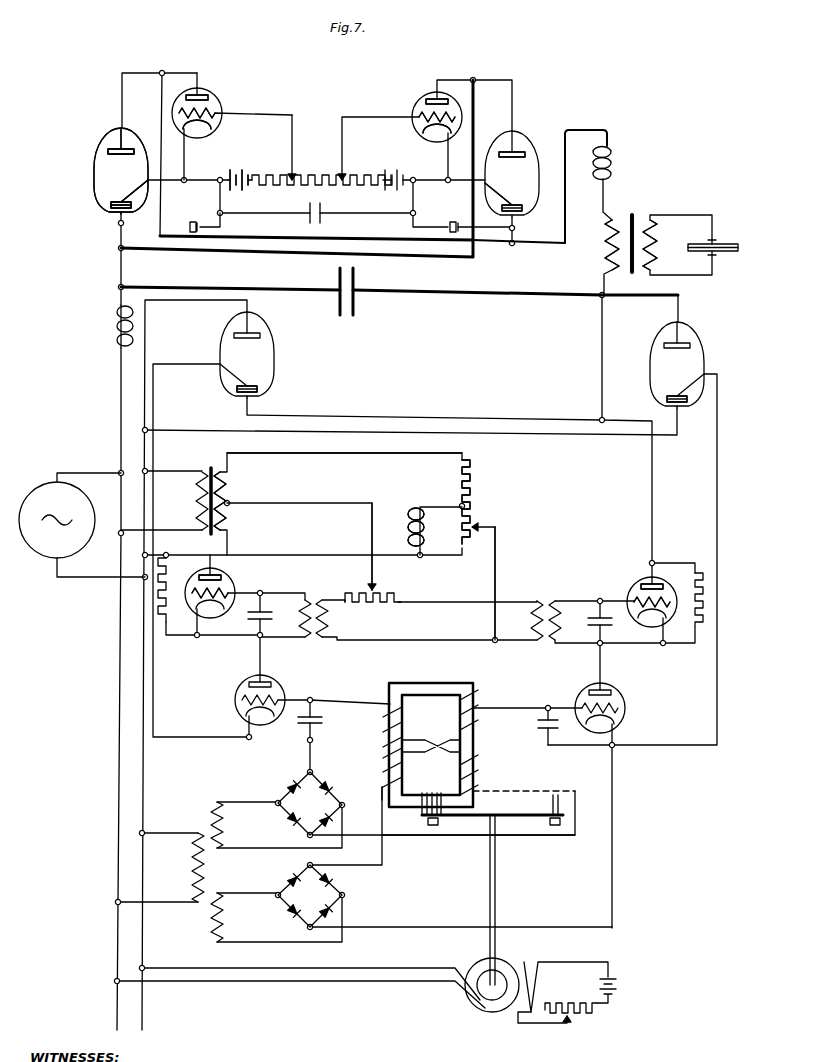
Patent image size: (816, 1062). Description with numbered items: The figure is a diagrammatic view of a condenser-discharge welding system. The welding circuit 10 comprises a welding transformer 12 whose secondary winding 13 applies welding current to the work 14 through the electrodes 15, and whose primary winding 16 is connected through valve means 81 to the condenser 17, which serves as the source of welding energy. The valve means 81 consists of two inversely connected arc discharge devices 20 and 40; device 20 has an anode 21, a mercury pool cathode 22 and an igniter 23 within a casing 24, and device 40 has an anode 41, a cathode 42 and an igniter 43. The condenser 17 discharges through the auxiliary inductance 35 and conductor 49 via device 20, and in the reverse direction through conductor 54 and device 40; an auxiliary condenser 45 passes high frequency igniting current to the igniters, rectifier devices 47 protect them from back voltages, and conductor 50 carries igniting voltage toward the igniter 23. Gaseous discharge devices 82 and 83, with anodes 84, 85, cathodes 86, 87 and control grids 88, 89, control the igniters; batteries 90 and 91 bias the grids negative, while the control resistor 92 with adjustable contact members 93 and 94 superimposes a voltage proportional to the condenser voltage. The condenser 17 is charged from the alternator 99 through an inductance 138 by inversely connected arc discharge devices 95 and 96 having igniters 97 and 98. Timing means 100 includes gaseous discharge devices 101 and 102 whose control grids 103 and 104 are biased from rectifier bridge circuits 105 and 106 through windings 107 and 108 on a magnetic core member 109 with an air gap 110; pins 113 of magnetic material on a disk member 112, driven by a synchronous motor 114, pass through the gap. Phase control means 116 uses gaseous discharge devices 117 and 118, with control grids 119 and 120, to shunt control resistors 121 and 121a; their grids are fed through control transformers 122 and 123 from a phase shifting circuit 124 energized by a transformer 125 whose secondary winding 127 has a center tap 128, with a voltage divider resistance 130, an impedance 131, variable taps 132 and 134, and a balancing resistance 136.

The welding circuit 10 is at (638, 117).
The welding transformer 12 is at (654, 204).
The secondary winding 13 is at (658, 260).
The work 14 is at (740, 246).
The electrodes 15 is at (716, 242).
The primary winding 16 is at (609, 275).
The condenser 17 is at (357, 306).
The arc discharge device 20 is at (82, 137).
The anode 21 is at (122, 155).
The mercury pool cathode 22 is at (112, 210).
The igniter 23 is at (136, 191).
The casing 24 is at (95, 176).
The auxiliary inductance 35 is at (612, 152).
The arc discharge device 40 is at (545, 131).
The anode 41 is at (510, 158).
The cathode 42 is at (521, 221).
The igniter 43 is at (501, 204).
The auxiliary condenser 45 is at (330, 217).
The rectifier device 47 is at (198, 219).
The conductor 49 is at (566, 245).
The conductor 50 is at (258, 236).
The conductor 54 is at (471, 258).
The valve means 81 is at (321, 97).
The gaseous discharge device 82 is at (228, 76).
The gaseous discharge device 83 is at (423, 84).
The anode 84 is at (214, 97).
The anode 85 is at (424, 103).
The cathode 86 is at (212, 129).
The cathode 87 is at (441, 141).
The control grid 88 is at (220, 111).
The control grid 89 is at (426, 130).
The battery 90 is at (248, 189).
The battery 91 is at (385, 190).
The control resistor 92 is at (313, 176).
The adjustable contact member 93 is at (289, 176).
The adjustable contact member 94 is at (346, 156).
The arc discharge device 95 is at (303, 367).
The arc discharge device 96 is at (640, 369).
The igniter 97 is at (243, 385).
The igniter 98 is at (680, 393).
The alternator 99 is at (66, 602).
The timing means 100 is at (447, 869).
The gaseous discharge device 101 is at (271, 683).
The gaseous discharge device 102 is at (618, 685).
The control grid 103 is at (283, 697).
The control grid 104 is at (626, 706).
The rectifier bridge circuit 105 is at (322, 805).
The rectifier bridge circuit 106 is at (322, 897).
The winding 107 is at (404, 733).
The winding 108 is at (385, 760).
The magnetic core member 109 is at (470, 685).
The air gap 110 is at (428, 791).
The disk member 112 is at (535, 820).
The pins 113 is at (426, 814).
The synchronous motor 114 is at (486, 956).
The phase control means 116 is at (540, 552).
The gaseous discharge device 117 is at (230, 575).
The gaseous discharge device 118 is at (640, 581).
The control grid 119 is at (232, 594).
The control grid 120 is at (636, 599).
The control resistor 121 is at (200, 554).
The control resistor 121a is at (708, 604).
The control transformer 122 is at (329, 586).
The control transformer 123 is at (567, 587).
The phase shifting circuit 124 is at (354, 494).
The transformer 125 is at (214, 459).
The secondary winding 127 is at (227, 519).
The center tap 128 is at (232, 501).
The voltage divider resistance 130 is at (472, 487).
The impedance 131 is at (416, 530).
The variable tap 132 is at (480, 524).
The variable tap 134 is at (378, 588).
The balancing resistance 136 is at (372, 606).
The inductance 138 is at (114, 331).